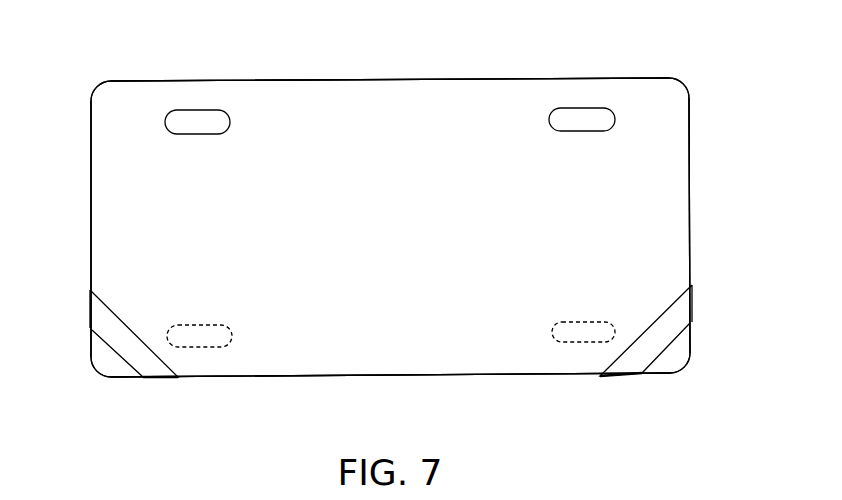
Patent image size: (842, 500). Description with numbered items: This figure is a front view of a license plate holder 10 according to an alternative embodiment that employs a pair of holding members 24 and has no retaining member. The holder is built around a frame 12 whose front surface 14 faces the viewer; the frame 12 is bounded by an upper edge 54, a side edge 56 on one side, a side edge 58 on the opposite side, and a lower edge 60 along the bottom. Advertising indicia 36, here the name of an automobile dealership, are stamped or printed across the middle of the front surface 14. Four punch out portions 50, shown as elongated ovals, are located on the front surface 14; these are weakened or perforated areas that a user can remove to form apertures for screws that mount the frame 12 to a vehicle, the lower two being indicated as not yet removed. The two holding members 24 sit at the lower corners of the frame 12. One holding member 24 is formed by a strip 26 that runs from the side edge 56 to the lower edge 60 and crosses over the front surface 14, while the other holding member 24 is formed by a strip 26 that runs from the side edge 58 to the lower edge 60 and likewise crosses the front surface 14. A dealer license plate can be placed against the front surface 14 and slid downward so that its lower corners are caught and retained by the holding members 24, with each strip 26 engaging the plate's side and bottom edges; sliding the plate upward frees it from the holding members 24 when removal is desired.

The license plate holder 10 is at (390, 221).
The frame 12 is at (118, 155).
The front surface 14 is at (330, 99).
The holding member 24 is at (100, 315).
The strip 26 is at (157, 377).
The advertising indicia 36 is at (655, 212).
The punch out portion 50 is at (193, 112).
The upper edge 54 is at (421, 74).
The side edge 56 is at (87, 218).
The side edge 58 is at (693, 152).
The lower edge 60 is at (323, 379).